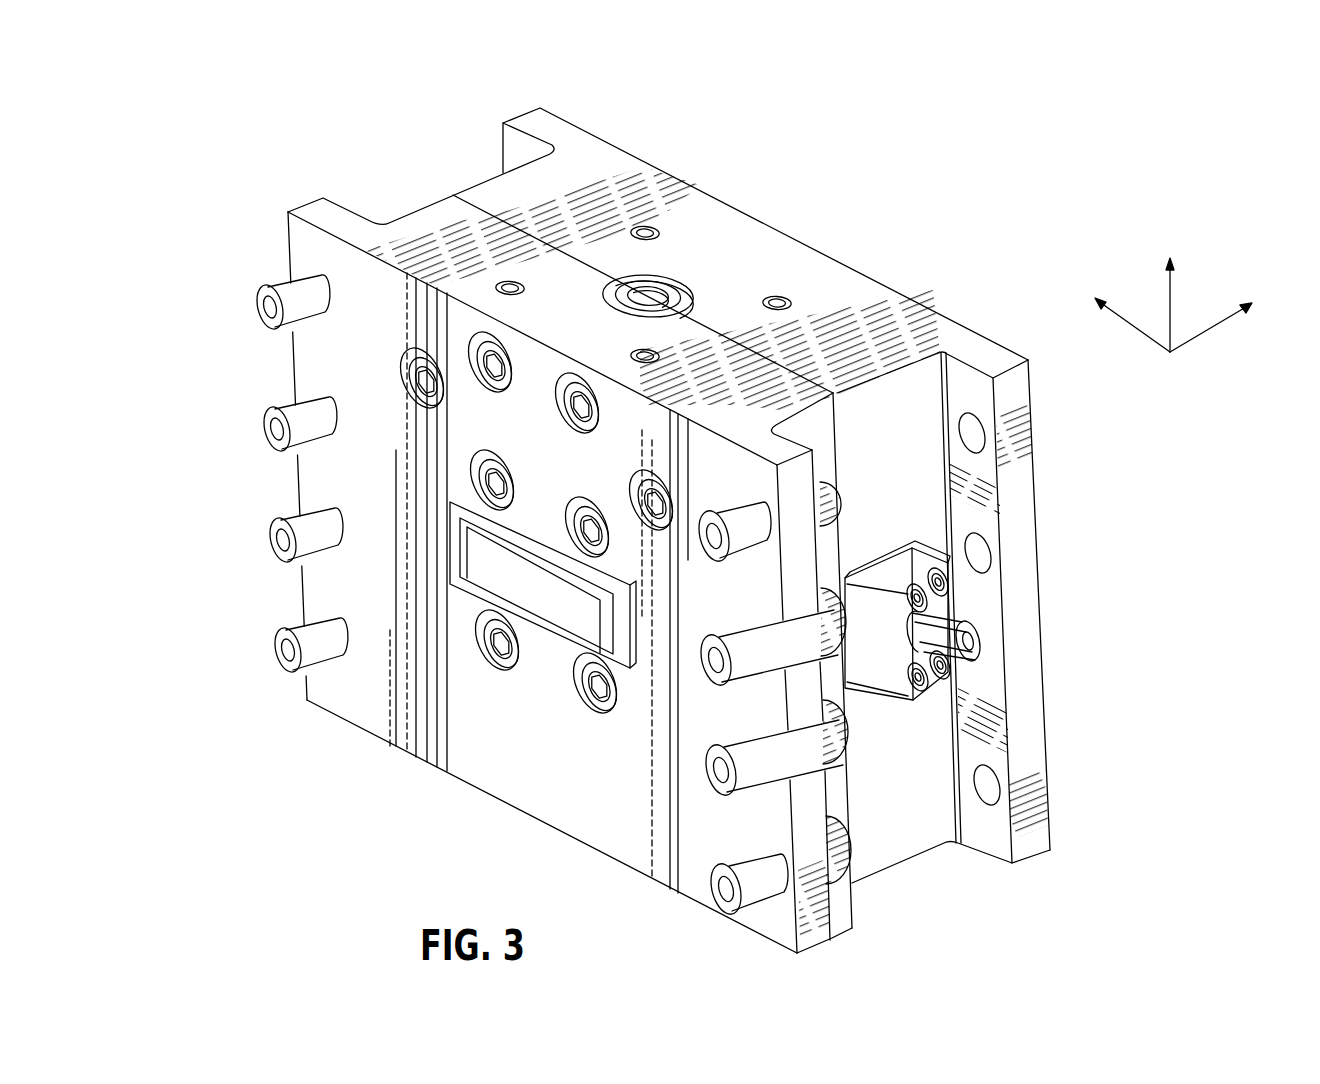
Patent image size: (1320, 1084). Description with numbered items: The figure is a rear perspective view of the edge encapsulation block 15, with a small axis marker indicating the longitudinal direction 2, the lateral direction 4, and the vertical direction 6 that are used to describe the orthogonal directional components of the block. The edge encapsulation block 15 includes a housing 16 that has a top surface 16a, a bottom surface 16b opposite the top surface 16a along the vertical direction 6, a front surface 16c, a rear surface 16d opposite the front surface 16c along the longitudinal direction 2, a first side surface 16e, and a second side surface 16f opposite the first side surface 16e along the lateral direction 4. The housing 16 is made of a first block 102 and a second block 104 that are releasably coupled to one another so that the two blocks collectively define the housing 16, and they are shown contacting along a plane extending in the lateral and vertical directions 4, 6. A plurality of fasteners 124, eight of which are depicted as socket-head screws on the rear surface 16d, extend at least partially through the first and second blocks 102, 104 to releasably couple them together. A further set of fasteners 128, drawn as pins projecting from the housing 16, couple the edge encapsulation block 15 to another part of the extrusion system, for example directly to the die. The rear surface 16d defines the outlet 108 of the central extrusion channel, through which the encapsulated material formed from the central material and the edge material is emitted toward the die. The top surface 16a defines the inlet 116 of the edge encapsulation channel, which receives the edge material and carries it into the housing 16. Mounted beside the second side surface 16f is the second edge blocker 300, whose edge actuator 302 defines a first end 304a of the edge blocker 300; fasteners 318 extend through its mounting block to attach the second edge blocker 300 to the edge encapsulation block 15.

The edge encapsulation block 15 is at (337, 110).
The housing 16 is at (310, 200).
The top surface 16a is at (652, 288).
The bottom surface 16b is at (397, 750).
The front surface 16c is at (687, 185).
The rear surface 16d is at (539, 583).
The first side surface 16e is at (477, 180).
The second side surface 16f is at (931, 609).
The first block 102 is at (583, 167).
The second block 104 is at (325, 250).
The outlet 108 is at (480, 555).
The inlet 116 is at (647, 297).
The fasteners 124 is at (483, 450).
The fasteners 128 is at (280, 655).
The second edge blocker 300 is at (950, 577).
The edge actuator 302 is at (945, 668).
The first end 304a is at (980, 645).
The fasteners 318 is at (923, 690).
The longitudinal direction 2 is at (1211, 327).
The lateral direction 4 is at (1132, 325).
The vertical direction 6 is at (1178, 305).